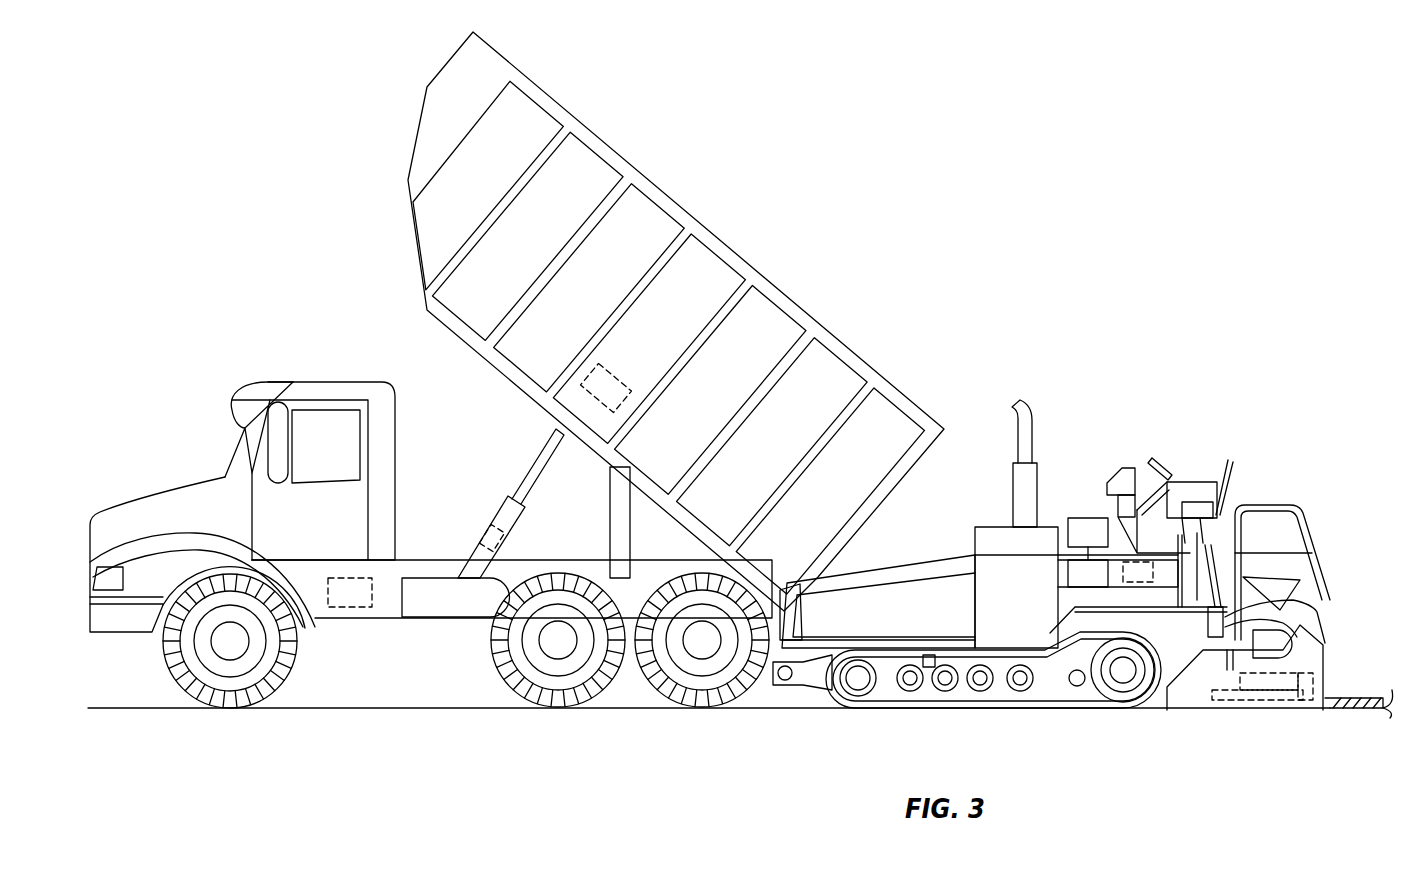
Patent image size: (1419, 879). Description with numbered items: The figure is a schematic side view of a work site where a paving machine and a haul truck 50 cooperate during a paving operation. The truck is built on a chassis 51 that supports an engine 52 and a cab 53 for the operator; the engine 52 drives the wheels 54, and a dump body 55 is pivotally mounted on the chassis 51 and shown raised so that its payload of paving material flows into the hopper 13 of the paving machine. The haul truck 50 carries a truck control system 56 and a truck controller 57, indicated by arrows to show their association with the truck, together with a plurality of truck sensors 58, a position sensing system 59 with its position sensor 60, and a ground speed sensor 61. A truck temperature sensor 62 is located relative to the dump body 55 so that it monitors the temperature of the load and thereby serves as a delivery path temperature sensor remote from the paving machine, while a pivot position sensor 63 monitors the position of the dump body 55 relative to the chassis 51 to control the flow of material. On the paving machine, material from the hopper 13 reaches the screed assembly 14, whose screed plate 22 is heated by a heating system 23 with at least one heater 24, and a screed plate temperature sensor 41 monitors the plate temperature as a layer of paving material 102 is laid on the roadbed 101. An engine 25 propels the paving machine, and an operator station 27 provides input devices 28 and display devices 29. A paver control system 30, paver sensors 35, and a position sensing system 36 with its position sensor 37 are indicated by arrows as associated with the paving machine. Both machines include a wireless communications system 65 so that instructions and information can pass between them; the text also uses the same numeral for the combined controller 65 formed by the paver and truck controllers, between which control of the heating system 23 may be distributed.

The hopper 13 is at (905, 617).
The screed assembly 14 is at (1273, 690).
The screed plate 22 is at (1228, 700).
The heating system 23 is at (1322, 630).
The heater 24 is at (1255, 690).
The engine 25 is at (998, 540).
The operator station 27 is at (1218, 461).
The input devices 28 is at (1165, 485).
The display devices 29 is at (1140, 468).
The paver control system 30 is at (995, 373).
The paver sensors 35 is at (1030, 345).
The position sensing system 36 is at (1075, 358).
The position sensor 37 is at (1100, 338).
The screed plate temperature sensor 41 is at (1305, 700).
The haul truck 50 is at (192, 172).
The chassis 51 is at (352, 620).
The engine 52 is at (185, 510).
The cab 53 is at (318, 385).
The wheels 54 is at (646, 692).
The dump body 55 is at (585, 170).
The truck control system 56 is at (92, 372).
The truck controller 57 is at (357, 587).
The truck sensors 58 is at (113, 336).
The position sensing system 59 is at (157, 353).
The position sensor 60 is at (187, 316).
The ground speed sensor 61 is at (233, 338).
The truck temperature sensor 62 is at (600, 390).
The pivot position sensor 63 is at (490, 528).
The wireless communications system 65 is at (298, 316).
The roadbed 101 is at (430, 702).
The paving material 102 is at (1355, 697).